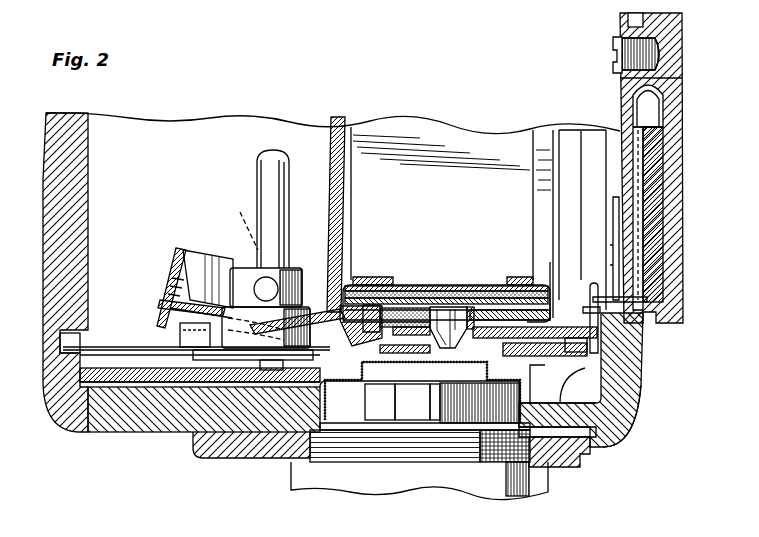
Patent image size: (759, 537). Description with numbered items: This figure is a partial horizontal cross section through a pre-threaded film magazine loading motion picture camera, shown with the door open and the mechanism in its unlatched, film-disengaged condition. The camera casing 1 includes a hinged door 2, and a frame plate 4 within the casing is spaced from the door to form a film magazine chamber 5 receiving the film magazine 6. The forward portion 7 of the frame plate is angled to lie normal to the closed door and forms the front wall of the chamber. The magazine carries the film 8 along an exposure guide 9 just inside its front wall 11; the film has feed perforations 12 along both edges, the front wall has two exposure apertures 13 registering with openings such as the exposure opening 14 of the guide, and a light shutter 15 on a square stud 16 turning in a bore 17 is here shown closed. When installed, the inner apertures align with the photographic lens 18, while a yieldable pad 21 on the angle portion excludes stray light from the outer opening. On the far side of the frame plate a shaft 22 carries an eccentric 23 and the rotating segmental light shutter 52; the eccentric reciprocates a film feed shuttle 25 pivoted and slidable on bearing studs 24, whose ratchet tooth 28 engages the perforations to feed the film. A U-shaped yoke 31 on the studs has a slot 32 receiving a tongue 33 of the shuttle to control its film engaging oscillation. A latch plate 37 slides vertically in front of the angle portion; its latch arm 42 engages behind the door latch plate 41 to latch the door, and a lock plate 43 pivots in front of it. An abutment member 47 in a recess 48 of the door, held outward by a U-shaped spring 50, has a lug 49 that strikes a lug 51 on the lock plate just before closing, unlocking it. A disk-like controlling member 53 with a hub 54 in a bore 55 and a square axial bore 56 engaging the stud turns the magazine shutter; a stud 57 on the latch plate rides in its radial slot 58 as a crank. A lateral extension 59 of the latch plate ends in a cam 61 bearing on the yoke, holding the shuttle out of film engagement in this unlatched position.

The photographic camera casing 1 is at (62, 160).
The door 2 is at (682, 38).
The frame plate 4 is at (333, 130).
The film magazine chamber 5 is at (580, 142).
The film magazine 6 is at (470, 130).
The forward portion of the frame plate 7 is at (615, 344).
The motion picture film 8 is at (442, 309).
The exposure guide 9 is at (495, 300).
The front wall 11 is at (322, 340).
The feed perforations 12 is at (375, 288).
The exposure apertures 13 is at (411, 330).
The exposure opening of the exposure guide 14 is at (386, 295).
The light shutter 15 is at (500, 314).
The stud 16 is at (488, 330).
The bore 17 is at (470, 320).
The photographic lens 18 is at (410, 486).
The pad 21 is at (558, 336).
The shaft 22 is at (257, 160).
The eccentric 23 is at (210, 262).
The bearing studs 24 is at (258, 268).
The film feed shuttle 25 is at (174, 286).
The ratchet tooth 28 is at (402, 312).
The U-shaped yoke 31 is at (181, 250).
The slot 32 is at (168, 305).
The tongue 33 is at (192, 313).
The latch plate 37 is at (615, 357).
The door latch plate 41 is at (620, 84).
The latch arm 42 is at (600, 300).
The lock plate 43 is at (640, 380).
The abutment member 47 is at (643, 272).
The recess 48 is at (680, 82).
The abutment lug 49 is at (648, 300).
The U-shaped spring 50 is at (684, 108).
The abutment lug 51 is at (600, 311).
The rotating segmental light shutter 52 is at (116, 346).
The magazine light shutter controlling member 53 is at (407, 330).
The hub 54 is at (440, 330).
The bore 55 is at (425, 330).
The axial bore 56 is at (456, 330).
The stud 57 is at (541, 368).
The radial slot 58 is at (556, 368).
The lateral extension 59 is at (340, 382).
The cam 61 is at (180, 334).